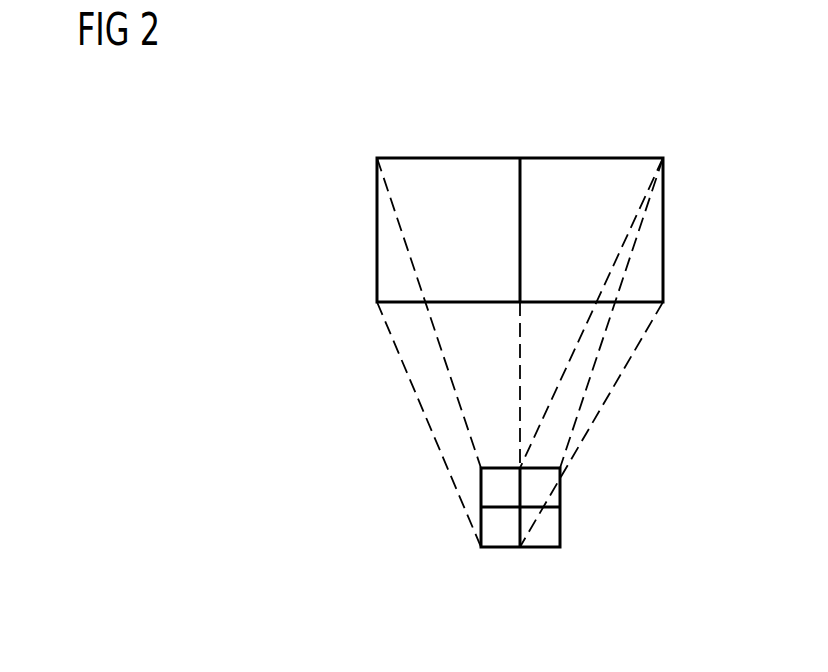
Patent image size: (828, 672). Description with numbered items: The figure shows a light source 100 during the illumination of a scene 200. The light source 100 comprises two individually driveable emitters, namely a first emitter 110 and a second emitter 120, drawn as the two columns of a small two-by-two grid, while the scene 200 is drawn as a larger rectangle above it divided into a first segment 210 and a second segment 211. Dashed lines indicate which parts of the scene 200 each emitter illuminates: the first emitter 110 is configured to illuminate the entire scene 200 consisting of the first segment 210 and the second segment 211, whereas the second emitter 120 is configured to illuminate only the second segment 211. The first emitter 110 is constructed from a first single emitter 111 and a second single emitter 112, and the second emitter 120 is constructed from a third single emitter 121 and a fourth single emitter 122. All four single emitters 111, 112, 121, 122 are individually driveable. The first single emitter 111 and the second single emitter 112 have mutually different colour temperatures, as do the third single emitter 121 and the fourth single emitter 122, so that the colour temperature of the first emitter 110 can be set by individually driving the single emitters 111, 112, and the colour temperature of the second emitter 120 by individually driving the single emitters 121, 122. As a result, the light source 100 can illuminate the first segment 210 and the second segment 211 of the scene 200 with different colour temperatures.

The light source 100 is at (598, 560).
The first emitter 110 is at (520, 556).
The second emitter 120 is at (560, 556).
The first single emitter 111 is at (481, 487).
The second single emitter 112 is at (481, 525).
The third single emitter 121 is at (560, 486).
The fourth single emitter 122 is at (560, 525).
The scene 200 is at (517, 108).
The first segment 210 is at (448, 158).
The second segment 211 is at (592, 158).